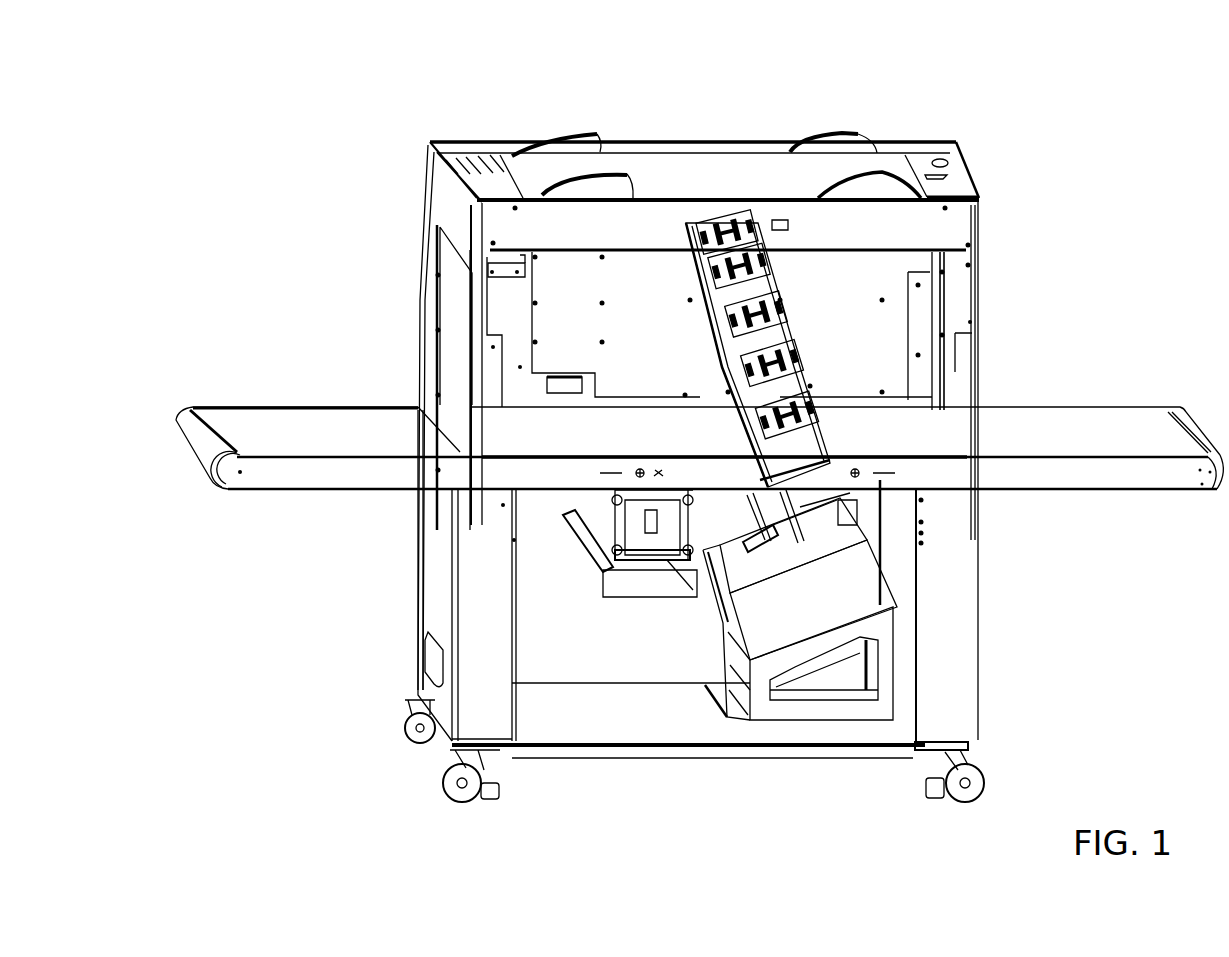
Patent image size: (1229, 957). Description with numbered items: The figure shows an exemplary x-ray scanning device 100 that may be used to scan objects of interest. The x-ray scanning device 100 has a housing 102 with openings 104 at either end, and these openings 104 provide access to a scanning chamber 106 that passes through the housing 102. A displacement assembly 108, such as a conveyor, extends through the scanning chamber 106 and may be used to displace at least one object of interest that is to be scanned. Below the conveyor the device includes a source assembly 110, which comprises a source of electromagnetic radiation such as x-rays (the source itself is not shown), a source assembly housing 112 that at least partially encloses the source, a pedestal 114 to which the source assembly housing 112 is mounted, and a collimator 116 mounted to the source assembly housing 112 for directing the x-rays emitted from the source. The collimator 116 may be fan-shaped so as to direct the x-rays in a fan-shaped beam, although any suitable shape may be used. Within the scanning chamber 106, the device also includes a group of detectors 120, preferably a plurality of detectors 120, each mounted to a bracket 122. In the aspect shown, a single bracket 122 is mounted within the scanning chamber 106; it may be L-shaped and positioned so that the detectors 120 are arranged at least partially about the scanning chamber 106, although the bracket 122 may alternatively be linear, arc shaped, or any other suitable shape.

The x-ray scanning device 100 is at (699, 432).
The housing 102 is at (712, 436).
The openings 104 is at (437, 305).
The scanning chamber 106 is at (456, 348).
The displacement assembly 108 is at (221, 390).
The source assembly 110 is at (893, 577).
The source assembly housing 112 is at (880, 600).
The pedestal 114 is at (880, 705).
The collimator 116 is at (797, 511).
The detectors 120 is at (806, 388).
The bracket 122 is at (800, 447).